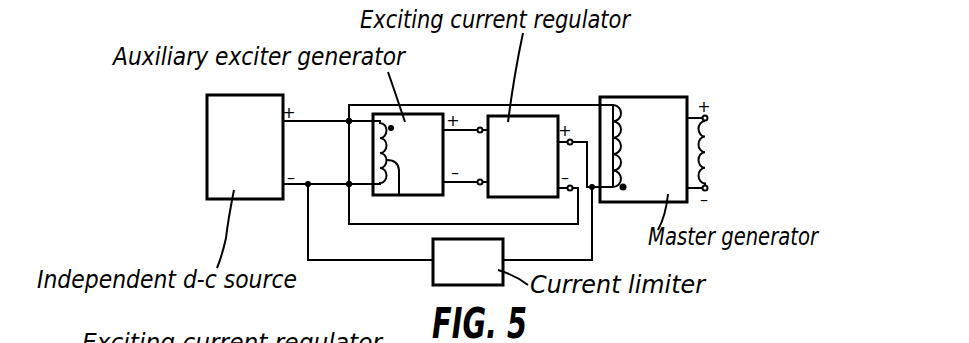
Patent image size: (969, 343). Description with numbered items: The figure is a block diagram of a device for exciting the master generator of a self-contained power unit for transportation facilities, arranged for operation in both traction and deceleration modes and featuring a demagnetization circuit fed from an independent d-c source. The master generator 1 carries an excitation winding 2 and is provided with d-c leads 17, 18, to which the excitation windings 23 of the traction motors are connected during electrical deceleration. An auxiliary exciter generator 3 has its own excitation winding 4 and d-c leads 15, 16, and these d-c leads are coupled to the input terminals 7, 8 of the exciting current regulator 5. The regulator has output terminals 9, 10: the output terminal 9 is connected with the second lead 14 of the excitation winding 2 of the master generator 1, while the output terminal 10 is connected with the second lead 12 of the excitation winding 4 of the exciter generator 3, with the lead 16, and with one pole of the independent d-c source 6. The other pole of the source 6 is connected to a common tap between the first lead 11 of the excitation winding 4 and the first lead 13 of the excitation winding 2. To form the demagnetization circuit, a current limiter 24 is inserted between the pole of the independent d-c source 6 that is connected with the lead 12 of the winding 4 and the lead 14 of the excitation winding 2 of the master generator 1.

The master generator 1 is at (643, 149).
The excitation winding 2 is at (622, 112).
The auxiliary exciter generator 3 is at (408, 154).
The excitation winding 4 is at (399, 195).
The exciting current regulator 5 is at (523, 156).
The independent d-c source 6 is at (245, 147).
The input terminal 7 is at (480, 133).
The input terminal 8 is at (480, 185).
The output terminal 9 is at (572, 140).
The output terminal 10 is at (571, 185).
The first lead 11 is at (367, 127).
The second lead 12 is at (364, 190).
The first lead 13 is at (598, 104).
The second lead 14 is at (597, 202).
The d-c lead 15 is at (453, 132).
The d-c lead 16 is at (453, 184).
The d-c lead 17 is at (708, 116).
The d-c lead 18 is at (708, 191).
The excitation windings of traction motors 23 is at (713, 153).
The current limiter 24 is at (468, 262).